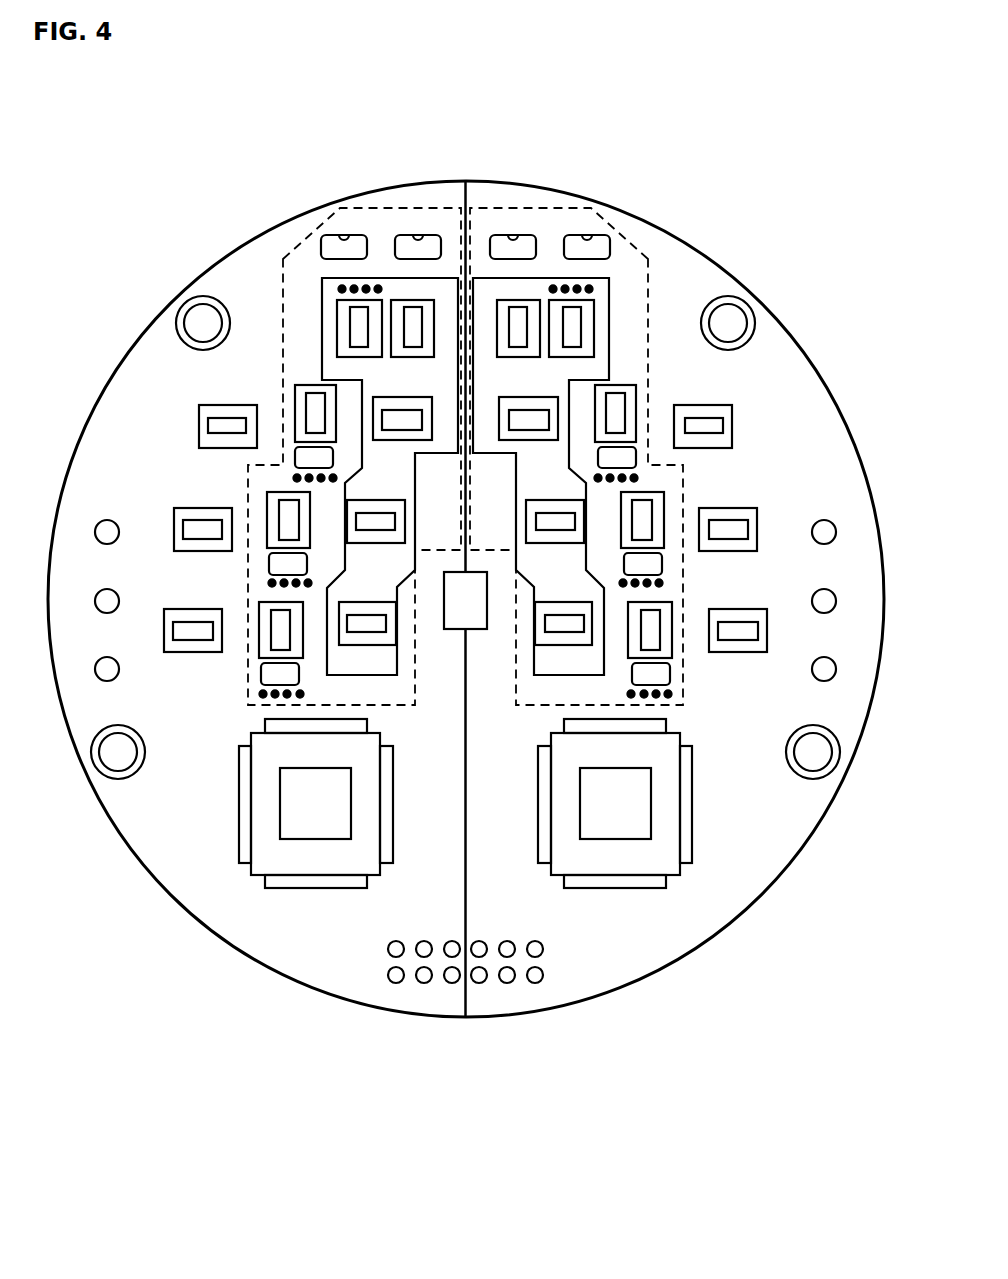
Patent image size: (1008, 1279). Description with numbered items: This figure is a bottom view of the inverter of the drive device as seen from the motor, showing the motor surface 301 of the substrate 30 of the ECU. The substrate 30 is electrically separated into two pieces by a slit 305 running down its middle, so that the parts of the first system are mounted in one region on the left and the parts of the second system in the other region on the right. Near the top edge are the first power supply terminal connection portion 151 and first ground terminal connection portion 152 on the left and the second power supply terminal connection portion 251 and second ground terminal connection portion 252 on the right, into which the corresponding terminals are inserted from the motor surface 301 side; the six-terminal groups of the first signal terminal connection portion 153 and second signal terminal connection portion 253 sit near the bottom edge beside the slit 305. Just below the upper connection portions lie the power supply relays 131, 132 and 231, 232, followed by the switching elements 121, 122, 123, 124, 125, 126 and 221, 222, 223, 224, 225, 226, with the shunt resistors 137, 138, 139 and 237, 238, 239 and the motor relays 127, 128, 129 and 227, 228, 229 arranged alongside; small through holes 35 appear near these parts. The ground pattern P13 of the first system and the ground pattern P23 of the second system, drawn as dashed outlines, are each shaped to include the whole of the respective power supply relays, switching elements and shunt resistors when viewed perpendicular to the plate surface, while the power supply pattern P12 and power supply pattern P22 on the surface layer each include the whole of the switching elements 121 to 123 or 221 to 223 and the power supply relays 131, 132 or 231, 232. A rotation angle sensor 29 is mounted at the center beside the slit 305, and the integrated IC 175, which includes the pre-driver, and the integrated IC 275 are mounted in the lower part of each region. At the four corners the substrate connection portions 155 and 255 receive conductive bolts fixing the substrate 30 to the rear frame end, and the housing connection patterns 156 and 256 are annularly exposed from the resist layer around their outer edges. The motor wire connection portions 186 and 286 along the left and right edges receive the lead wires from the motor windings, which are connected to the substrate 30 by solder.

The substrate 30 is at (216, 1004).
The motor surface 301 is at (322, 960).
The slit 305 is at (465, 832).
The rotation angle sensor 29 is at (479, 630).
The through holes (vias) 35 is at (378, 287).
The power supply pattern P12 is at (322, 343).
The ground pattern P13 is at (303, 232).
The power supply pattern P22 is at (609, 343).
The ground pattern P23 is at (628, 232).
The power supply relay 131 is at (337, 318).
The power supply relay 132 is at (423, 300).
The power supply relay 231 is at (594, 318).
The power supply relay 232 is at (505, 300).
The first power supply terminal connection portion 151 is at (418, 242).
The first ground terminal connection portion 152 is at (344, 242).
The second power supply terminal connection portion 251 is at (514, 242).
The second ground terminal connection portion 252 is at (588, 242).
The first signal terminal connection portion 153 is at (420, 980).
The second signal terminal connection portion 253 is at (510, 980).
The substrate connection portion 155 is at (195, 332).
The housing connection pattern 156 is at (188, 300).
The substrate connection portion 255 is at (736, 332).
The housing connection pattern 256 is at (743, 300).
The switching element 121 is at (422, 440).
The switching element 122 is at (405, 520).
The switching element 123 is at (370, 645).
The switching element 124 is at (296, 386).
The switching element 125 is at (267, 502).
The switching element 126 is at (266, 610).
The motor relay 127 is at (215, 405).
The motor relay 128 is at (192, 508).
The motor relay 129 is at (182, 609).
The shunt resistor 137 is at (298, 455).
The shunt resistor 138 is at (287, 568).
The shunt resistor 139 is at (270, 677).
The integrated IC 175 is at (262, 867).
The motor wire connection portion 186 is at (97, 602).
The switching element 221 is at (509, 440).
The switching element 222 is at (526, 520).
The switching element 223 is at (553, 645).
The switching element 224 is at (635, 386).
The switching element 225 is at (664, 502).
The switching element 226 is at (665, 610).
The motor relay 227 is at (716, 405).
The motor relay 228 is at (739, 508).
The motor relay 229 is at (749, 609).
The shunt resistor 237 is at (633, 455).
The shunt resistor 238 is at (644, 568).
The shunt resistor 239 is at (661, 677).
The integrated IC 275 is at (669, 867).
The motor wire connection portion 286 is at (834, 602).